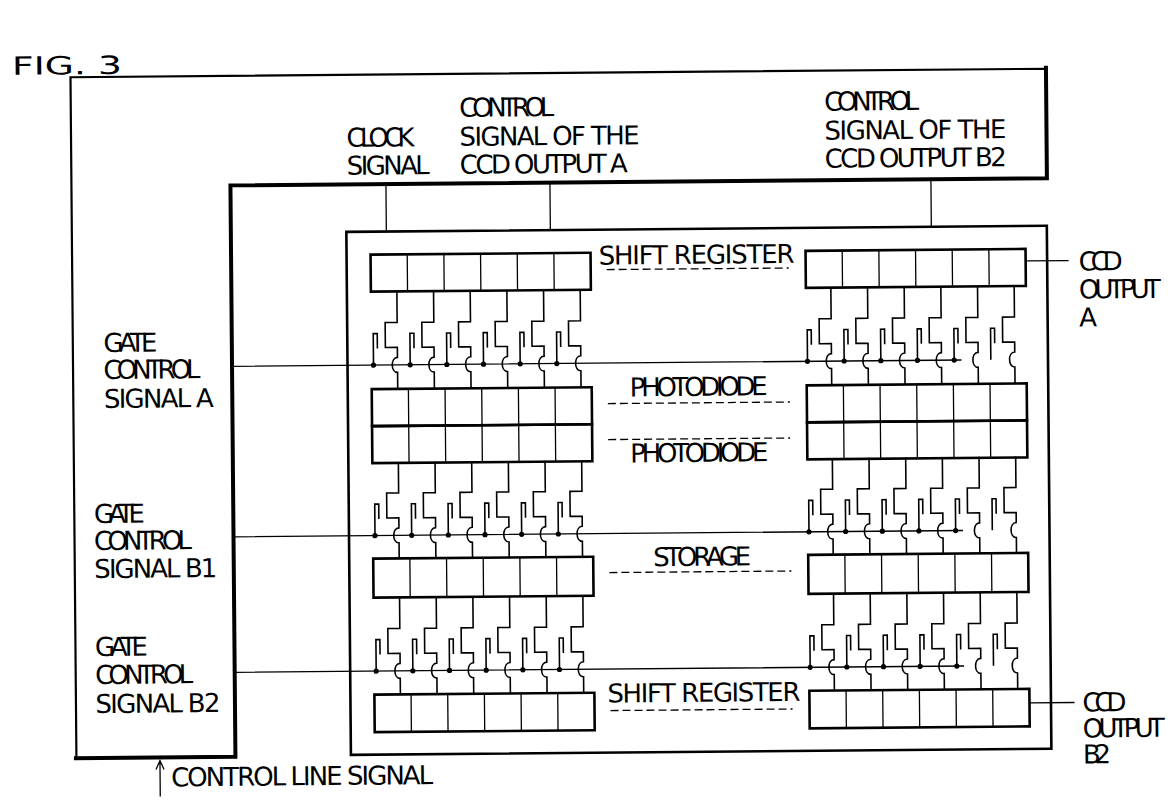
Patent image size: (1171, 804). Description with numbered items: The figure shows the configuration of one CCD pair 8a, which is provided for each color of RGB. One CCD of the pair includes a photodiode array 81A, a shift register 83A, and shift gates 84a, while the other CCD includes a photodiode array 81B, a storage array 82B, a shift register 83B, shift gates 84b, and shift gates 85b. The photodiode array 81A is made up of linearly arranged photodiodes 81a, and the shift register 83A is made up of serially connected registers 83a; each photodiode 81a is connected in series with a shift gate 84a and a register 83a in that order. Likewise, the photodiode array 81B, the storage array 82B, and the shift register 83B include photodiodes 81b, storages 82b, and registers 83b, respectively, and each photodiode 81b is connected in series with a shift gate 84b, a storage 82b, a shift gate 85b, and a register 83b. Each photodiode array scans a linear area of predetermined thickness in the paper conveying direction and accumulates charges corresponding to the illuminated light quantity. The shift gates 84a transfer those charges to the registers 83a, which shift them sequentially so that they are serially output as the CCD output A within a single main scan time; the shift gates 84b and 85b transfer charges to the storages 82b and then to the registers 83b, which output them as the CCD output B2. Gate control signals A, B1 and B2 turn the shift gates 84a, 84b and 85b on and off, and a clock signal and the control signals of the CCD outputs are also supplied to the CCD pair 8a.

The CCD pair 8a is at (1040, 226).
The register 83a is at (385, 266).
The shift gate 84a is at (390, 326).
The photodiode 81a is at (385, 410).
The photodiode 81b is at (385, 450).
The shift gate 84b is at (390, 494).
The storage 82b is at (385, 584).
The shift gate 85b is at (390, 632).
The register 83b is at (385, 718).
The shift register 83A is at (604, 291).
The photodiode array 81A is at (593, 370).
The photodiode array 81B is at (592, 476).
The storage array 82B is at (604, 595).
The shift register 83B is at (594, 675).